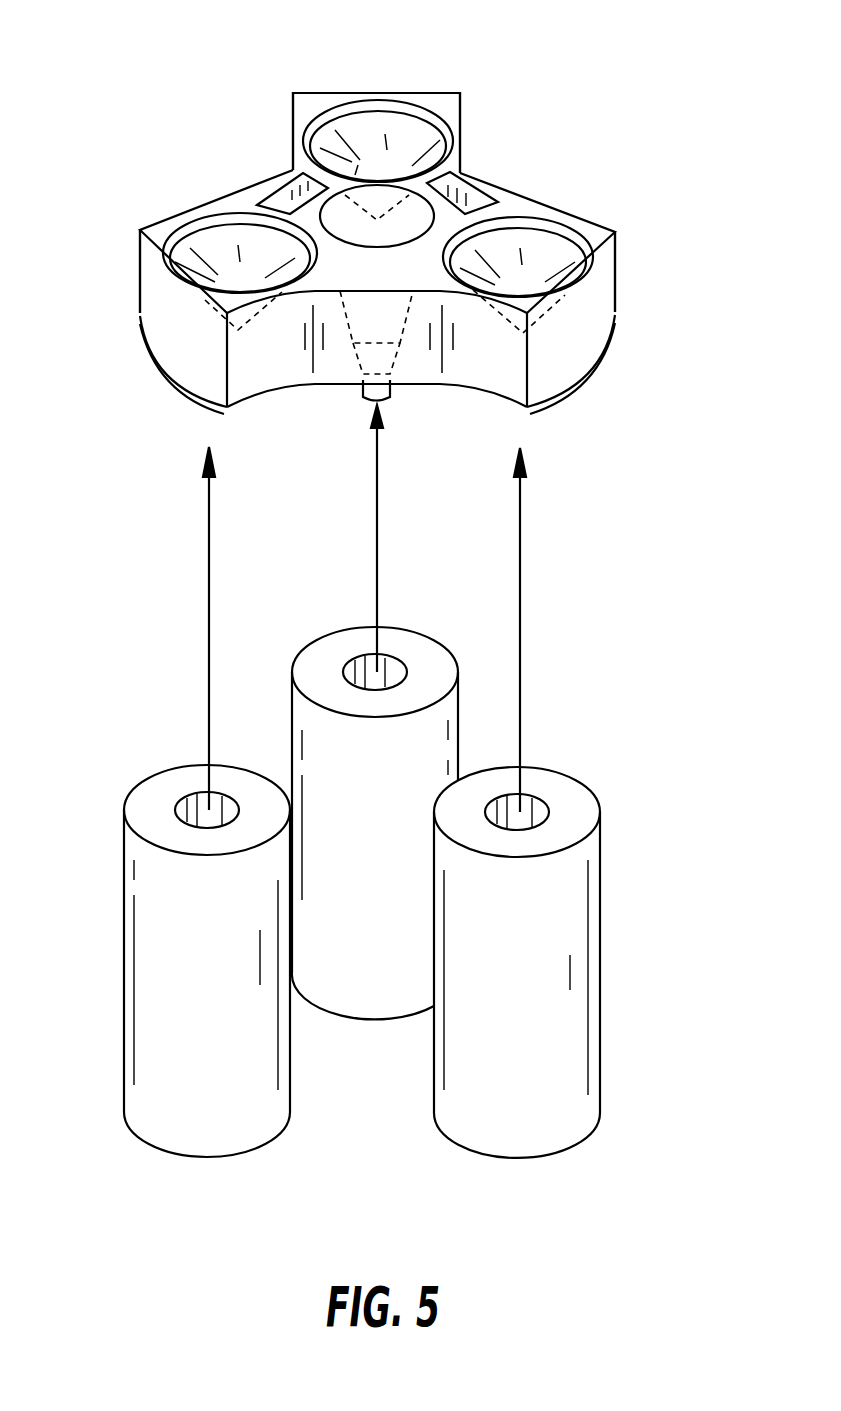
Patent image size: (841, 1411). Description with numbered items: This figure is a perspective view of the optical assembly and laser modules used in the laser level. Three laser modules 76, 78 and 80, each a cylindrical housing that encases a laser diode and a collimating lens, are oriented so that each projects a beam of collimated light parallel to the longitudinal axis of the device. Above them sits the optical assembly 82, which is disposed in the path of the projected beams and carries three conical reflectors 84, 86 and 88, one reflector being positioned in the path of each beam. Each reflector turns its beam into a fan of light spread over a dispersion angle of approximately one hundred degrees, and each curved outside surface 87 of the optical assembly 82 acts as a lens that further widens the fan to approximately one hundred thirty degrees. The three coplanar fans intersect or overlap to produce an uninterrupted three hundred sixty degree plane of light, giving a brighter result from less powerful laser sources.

The laser module 76 is at (175, 1140).
The laser module 78 is at (417, 762).
The laser module 80 is at (548, 912).
The optical assembly 82 is at (593, 378).
The conical reflector 84 is at (217, 257).
The conical reflector 86 is at (372, 133).
The curved outside surface 87 is at (340, 90).
The conical reflector 88 is at (530, 243).